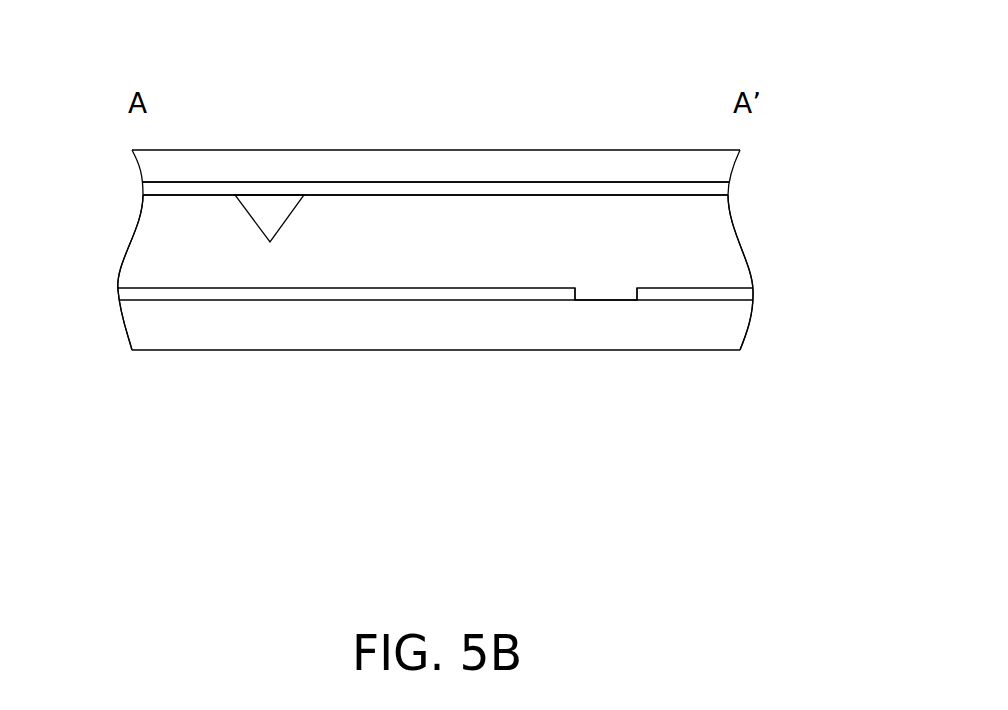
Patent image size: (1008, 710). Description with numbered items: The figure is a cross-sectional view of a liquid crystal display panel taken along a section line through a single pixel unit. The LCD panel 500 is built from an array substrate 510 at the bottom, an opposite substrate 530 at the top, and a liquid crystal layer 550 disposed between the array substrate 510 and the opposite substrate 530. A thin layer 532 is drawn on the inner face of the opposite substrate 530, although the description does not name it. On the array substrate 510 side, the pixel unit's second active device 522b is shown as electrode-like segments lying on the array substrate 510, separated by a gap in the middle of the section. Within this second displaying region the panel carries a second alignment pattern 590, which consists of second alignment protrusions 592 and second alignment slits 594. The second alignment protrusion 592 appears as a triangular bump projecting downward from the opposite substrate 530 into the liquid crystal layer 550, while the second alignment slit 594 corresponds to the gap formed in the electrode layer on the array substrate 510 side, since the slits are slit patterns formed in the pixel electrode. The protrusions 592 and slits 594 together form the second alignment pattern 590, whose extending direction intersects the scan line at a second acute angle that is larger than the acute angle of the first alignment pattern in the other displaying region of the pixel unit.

The LCD panel 500 is at (786, 612).
The array substrate 510 is at (763, 295).
The second active device 522b is at (458, 292).
The opposite substrate 530 is at (746, 165).
The common electrode 532 is at (152, 190).
The liquid crystal layer 550 is at (710, 225).
The second alignment pattern 590 is at (565, 63).
The second alignment protrusions 592 is at (270, 205).
The second alignment slits 594 is at (579, 291).